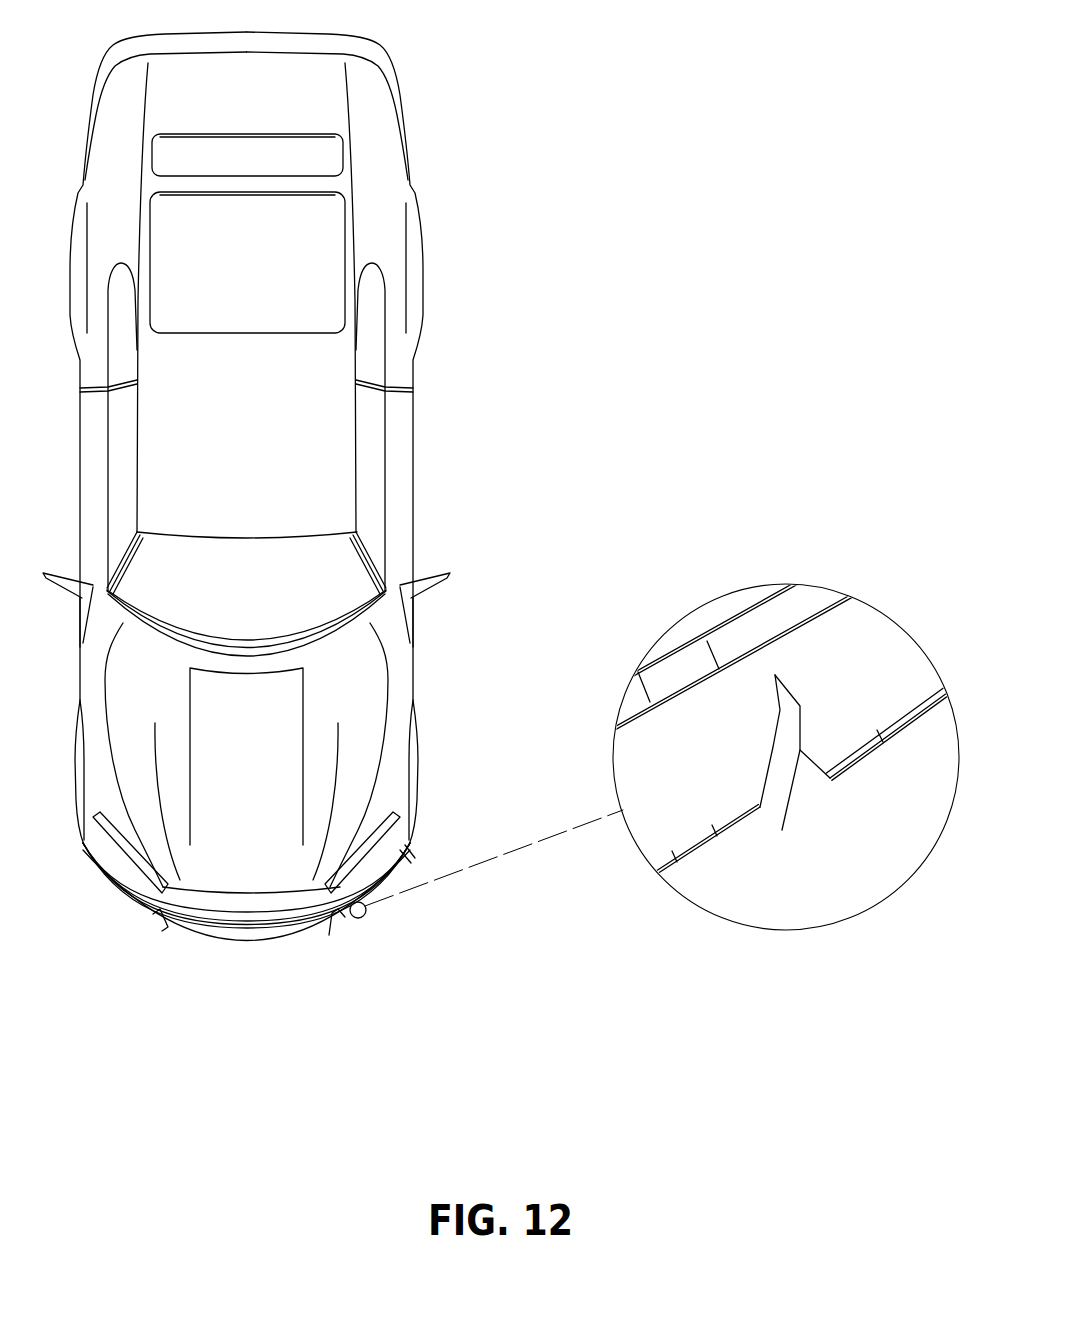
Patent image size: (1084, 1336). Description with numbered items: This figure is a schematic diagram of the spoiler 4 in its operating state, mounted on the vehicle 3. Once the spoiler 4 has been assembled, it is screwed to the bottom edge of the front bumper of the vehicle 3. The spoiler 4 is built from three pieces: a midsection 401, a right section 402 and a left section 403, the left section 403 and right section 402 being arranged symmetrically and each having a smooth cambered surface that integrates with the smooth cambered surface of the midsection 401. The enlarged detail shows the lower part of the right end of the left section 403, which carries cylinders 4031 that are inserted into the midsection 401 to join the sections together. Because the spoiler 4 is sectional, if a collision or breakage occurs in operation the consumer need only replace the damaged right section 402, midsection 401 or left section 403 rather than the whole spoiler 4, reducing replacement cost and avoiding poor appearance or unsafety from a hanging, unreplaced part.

The vehicle 3 is at (433, 290).
The spoiler 4 is at (226, 933).
The midsection 401 is at (307, 931).
The right section 402 is at (152, 916).
The left section 403 is at (408, 856).
The cylinder 4031 is at (782, 830).